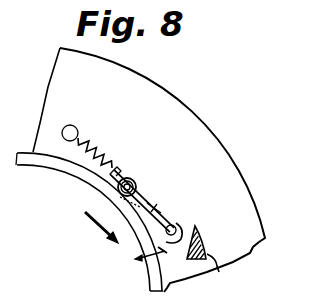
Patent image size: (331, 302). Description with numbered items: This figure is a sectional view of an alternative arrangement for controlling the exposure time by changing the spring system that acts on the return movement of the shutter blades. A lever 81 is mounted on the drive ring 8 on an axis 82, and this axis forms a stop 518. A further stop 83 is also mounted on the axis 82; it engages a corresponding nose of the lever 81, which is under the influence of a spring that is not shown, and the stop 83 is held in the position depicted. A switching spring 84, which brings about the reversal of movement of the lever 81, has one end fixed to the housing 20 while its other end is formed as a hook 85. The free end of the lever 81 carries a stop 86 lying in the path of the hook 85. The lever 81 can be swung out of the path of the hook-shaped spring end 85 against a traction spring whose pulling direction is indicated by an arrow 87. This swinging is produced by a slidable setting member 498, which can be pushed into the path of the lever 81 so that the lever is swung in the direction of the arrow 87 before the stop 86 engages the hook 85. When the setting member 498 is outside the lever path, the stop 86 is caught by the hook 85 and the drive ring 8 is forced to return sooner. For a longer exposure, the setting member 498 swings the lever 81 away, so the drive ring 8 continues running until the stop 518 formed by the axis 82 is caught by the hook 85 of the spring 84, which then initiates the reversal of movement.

The drive ring 8 is at (44, 167).
The housing 20 is at (168, 86).
The lever 81 is at (155, 207).
The axis 82 is at (135, 183).
The stop 83 is at (122, 193).
The switching spring 84 is at (100, 149).
The hook 85 is at (199, 231).
The stop 86 is at (178, 223).
The arrow 87 is at (153, 262).
The slidable setting member 498 is at (219, 272).
The stop 518 is at (105, 198).